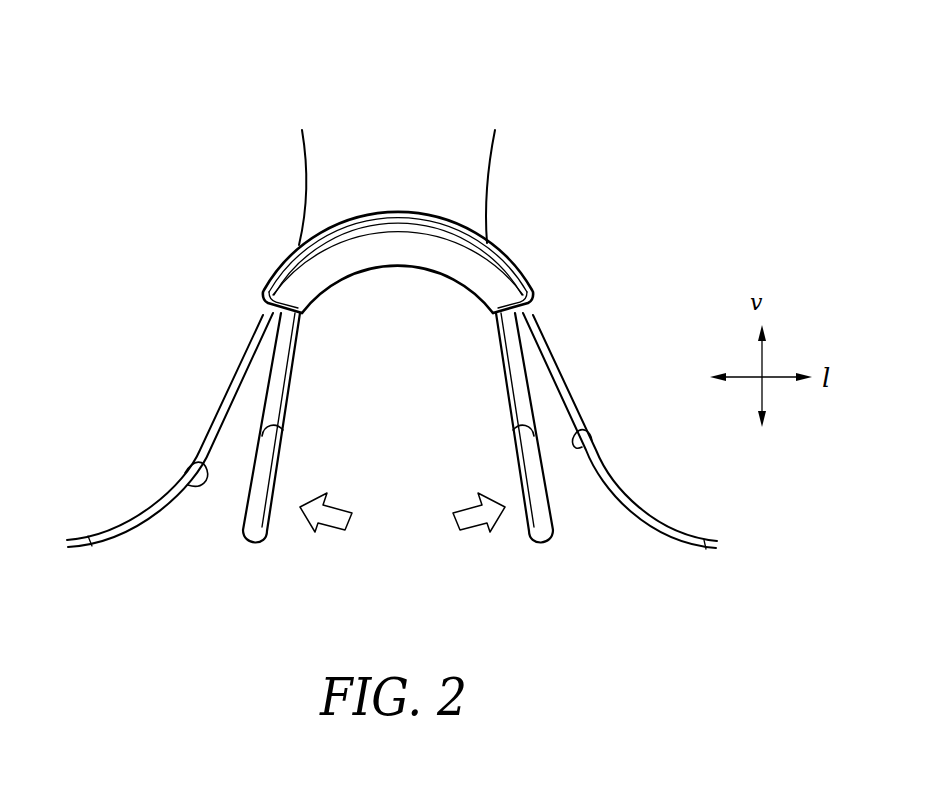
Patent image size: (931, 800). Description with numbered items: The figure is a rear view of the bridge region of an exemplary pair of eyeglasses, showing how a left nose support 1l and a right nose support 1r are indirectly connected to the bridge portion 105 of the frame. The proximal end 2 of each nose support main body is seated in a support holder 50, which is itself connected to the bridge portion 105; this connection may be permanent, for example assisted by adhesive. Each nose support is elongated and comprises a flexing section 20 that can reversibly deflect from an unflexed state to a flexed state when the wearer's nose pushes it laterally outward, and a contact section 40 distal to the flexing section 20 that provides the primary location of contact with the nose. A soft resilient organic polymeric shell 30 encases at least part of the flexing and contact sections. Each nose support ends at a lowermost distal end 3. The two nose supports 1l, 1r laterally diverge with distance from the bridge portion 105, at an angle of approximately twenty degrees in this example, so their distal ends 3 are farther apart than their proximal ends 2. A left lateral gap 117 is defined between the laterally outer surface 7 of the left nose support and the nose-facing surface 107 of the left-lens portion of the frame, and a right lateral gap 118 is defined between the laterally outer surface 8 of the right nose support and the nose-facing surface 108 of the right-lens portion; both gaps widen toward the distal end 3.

The bridge portion 105 is at (400, 149).
The proximal end 2 is at (392, 403).
The support holder 50 is at (482, 262).
The flexing section 20 is at (333, 350).
The laterally outer surface of left nose support 7 is at (262, 459).
The soft resilient organic polymeric shell 30 is at (265, 457).
The contact section 40 is at (311, 474).
The distal end 3 is at (286, 552).
The laterally outer surface of right nose support 8 is at (523, 393).
The left lateral gap 117 is at (170, 430).
The nose-facing surface of left-lens portion 107 is at (188, 485).
The right lateral gap 118 is at (619, 426).
The nose-facing surface of right-lens portion 108 is at (582, 447).
The left nose support 1l is at (245, 578).
The right nose support 1r is at (550, 577).